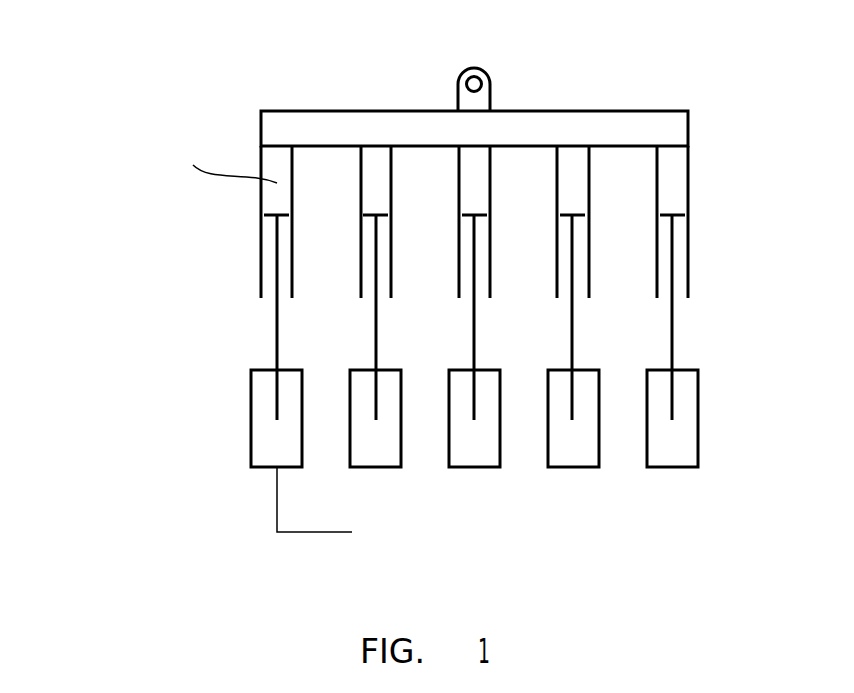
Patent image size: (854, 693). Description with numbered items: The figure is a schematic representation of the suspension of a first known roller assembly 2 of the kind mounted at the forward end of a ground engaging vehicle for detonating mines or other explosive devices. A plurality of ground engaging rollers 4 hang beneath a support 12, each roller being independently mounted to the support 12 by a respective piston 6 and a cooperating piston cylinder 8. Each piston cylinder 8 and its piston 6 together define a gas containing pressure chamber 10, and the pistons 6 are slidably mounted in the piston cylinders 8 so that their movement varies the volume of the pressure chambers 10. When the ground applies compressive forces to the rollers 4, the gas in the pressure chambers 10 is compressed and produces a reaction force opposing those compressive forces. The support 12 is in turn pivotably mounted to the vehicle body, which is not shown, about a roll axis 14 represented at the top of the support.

The roller assembly 2 is at (745, 274).
The ground engaging rollers 4 is at (685, 447).
The pistons 6 is at (672, 337).
The piston cylinders 8 is at (688, 173).
The pressure chambers 10 is at (673, 193).
The support 12 is at (678, 128).
The roll axis 14 is at (470, 72).